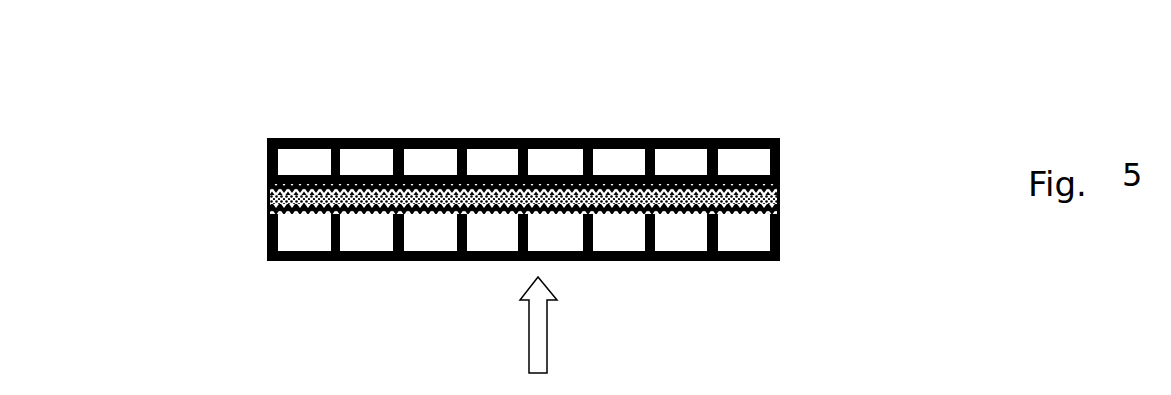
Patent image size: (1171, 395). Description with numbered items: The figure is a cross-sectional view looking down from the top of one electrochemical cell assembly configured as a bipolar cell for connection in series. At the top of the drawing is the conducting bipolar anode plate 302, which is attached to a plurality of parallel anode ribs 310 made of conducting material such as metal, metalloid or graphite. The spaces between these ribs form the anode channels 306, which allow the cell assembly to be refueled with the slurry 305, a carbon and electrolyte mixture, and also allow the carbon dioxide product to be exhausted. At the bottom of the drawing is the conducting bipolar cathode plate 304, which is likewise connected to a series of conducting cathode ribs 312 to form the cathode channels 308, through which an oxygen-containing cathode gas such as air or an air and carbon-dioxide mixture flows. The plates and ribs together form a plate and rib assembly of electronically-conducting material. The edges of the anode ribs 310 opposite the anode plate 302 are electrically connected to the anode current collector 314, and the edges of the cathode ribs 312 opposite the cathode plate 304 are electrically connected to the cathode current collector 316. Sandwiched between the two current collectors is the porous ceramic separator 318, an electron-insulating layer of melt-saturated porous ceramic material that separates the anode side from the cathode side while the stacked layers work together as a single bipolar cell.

The conducting bipolar anode plate 302 is at (510, 140).
The conducting bipolar cathode plate 304 is at (420, 262).
The slurry 305 is at (680, 176).
The anode channels 306 is at (600, 165).
The cathode channels 308 is at (618, 228).
The anode ribs 310 is at (393, 156).
The cathode ribs 312 is at (396, 226).
The anode current collector 314 is at (748, 183).
The cathode current collector 316 is at (737, 216).
The porous ceramic separator 318 is at (268, 200).